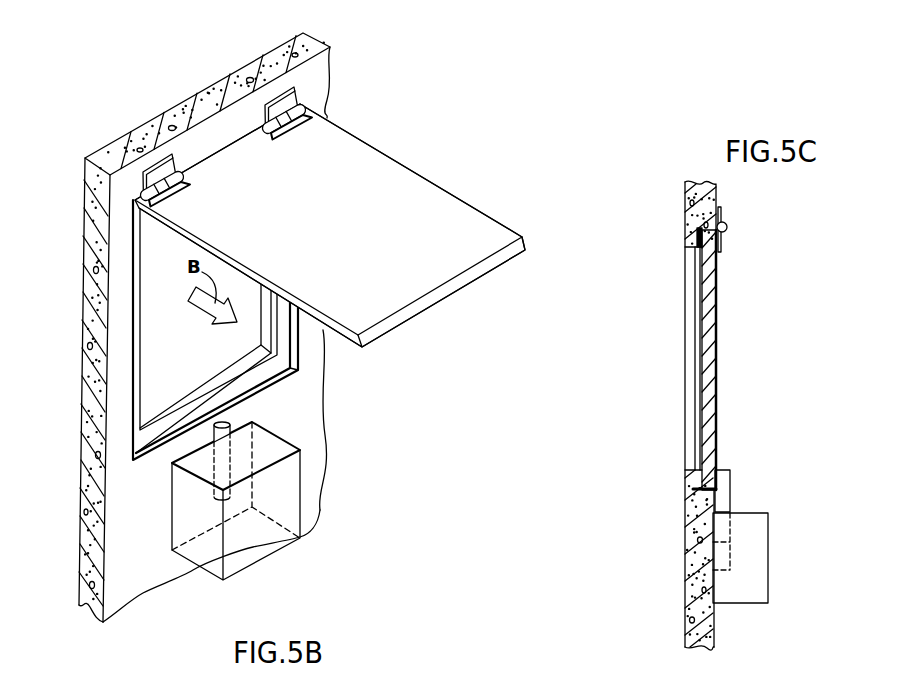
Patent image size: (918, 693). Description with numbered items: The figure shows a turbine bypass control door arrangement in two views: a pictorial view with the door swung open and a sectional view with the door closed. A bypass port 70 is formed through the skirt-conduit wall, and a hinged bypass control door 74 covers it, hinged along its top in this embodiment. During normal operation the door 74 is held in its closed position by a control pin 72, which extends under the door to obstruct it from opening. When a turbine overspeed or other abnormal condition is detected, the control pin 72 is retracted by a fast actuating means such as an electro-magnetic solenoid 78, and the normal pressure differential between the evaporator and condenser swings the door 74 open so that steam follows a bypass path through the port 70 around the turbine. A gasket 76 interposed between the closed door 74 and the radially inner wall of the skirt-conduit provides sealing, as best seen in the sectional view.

In FIG. 5B, the bypass port 70 is at (148, 330).
In FIG. 5C, the bypass port 70 is at (690, 372).
In FIG. 5B, the control pin 72 is at (230, 432).
In FIG. 5C, the control pin 72 is at (722, 482).
In FIG. 5B, the bypass control door 74 is at (460, 211).
In FIG. 5C, the bypass control door 74 is at (708, 295).
In FIG. 5B, the gasket 76 is at (178, 403).
In FIG. 5C, the gasket 76 is at (697, 238).
In FIG. 5B, the electro-magnetic solenoid 78 is at (273, 540).
In FIG. 5C, the electro-magnetic solenoid 78 is at (762, 556).